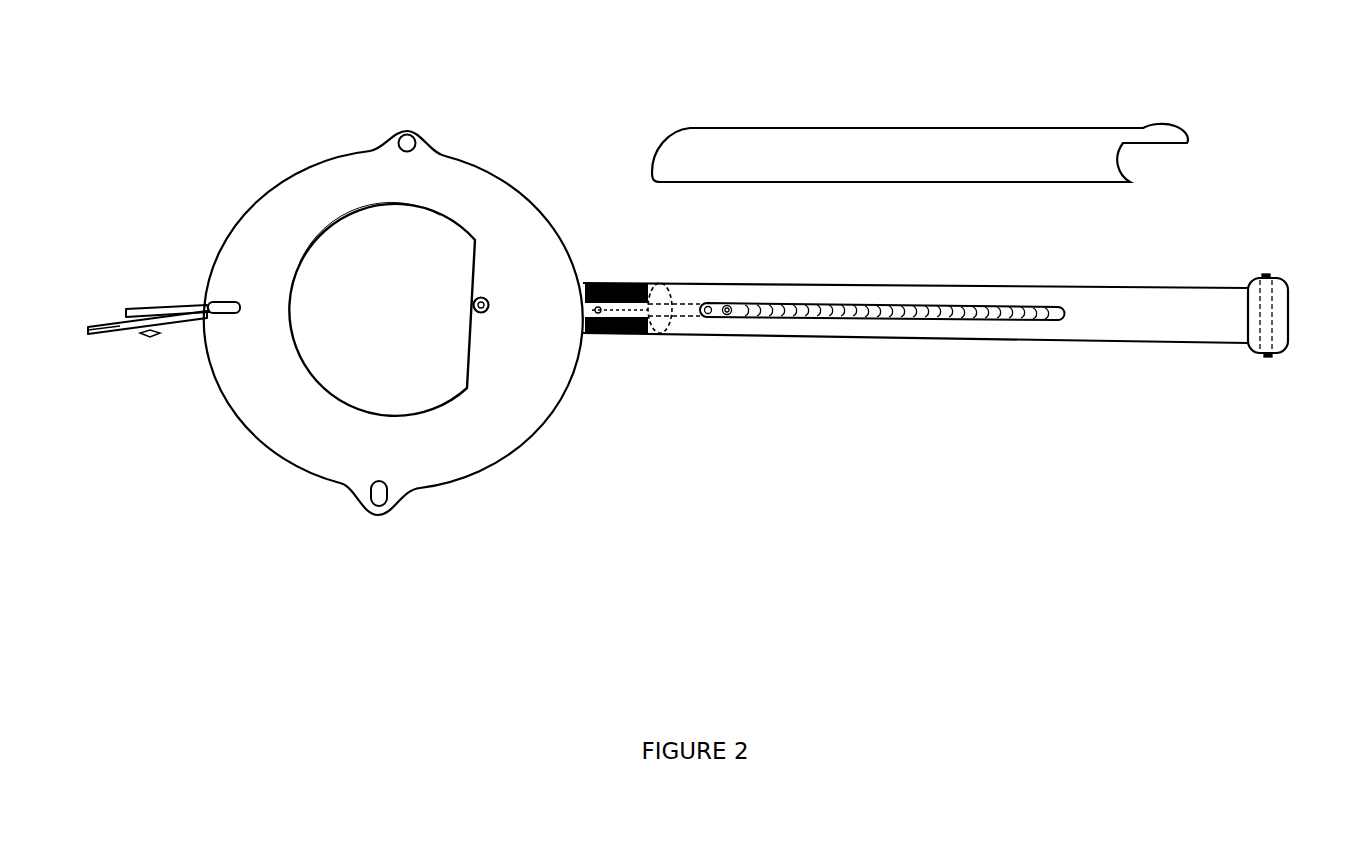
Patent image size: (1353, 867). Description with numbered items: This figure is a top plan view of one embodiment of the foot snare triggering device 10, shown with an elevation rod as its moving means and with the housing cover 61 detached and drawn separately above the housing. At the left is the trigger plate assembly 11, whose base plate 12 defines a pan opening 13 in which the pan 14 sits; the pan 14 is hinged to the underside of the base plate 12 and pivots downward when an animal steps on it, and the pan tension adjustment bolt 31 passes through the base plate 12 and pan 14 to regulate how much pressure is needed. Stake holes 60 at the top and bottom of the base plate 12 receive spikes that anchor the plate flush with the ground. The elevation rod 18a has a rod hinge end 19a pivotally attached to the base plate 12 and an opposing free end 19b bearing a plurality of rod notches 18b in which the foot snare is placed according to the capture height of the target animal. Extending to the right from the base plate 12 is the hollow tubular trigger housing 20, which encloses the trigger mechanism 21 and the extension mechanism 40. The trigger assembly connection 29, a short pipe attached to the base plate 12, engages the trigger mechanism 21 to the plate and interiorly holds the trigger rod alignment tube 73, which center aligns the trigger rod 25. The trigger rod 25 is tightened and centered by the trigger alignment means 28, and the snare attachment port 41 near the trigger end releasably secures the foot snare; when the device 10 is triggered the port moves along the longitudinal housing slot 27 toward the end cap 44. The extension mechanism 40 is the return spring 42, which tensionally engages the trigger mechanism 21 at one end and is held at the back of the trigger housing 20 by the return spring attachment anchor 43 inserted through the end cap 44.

The foot snare triggering device 10 is at (690, 278).
The trigger plate assembly 11 is at (475, 138).
The base plate 12 is at (307, 465).
The pan opening 13 is at (316, 250).
The pan 14 is at (352, 250).
The elevation rod 18a is at (113, 323).
The rod notches 18b is at (155, 310).
The rod hinge end 19a is at (231, 302).
The free end 19b is at (90, 335).
The trigger housing 20 is at (1087, 316).
The trigger mechanism 21 is at (608, 272).
The trigger rod 25 is at (690, 318).
The housing slot 27 is at (971, 320).
The trigger alignment means 28 is at (726, 318).
The trigger assembly connection 29 is at (662, 335).
The pan tension adjustment bolt 31 is at (482, 312).
The extension mechanism 40 is at (905, 270).
The snare attachment port 41 is at (708, 318).
The return spring 42 is at (852, 320).
The return spring attachment anchor 43 is at (1268, 357).
The end cap 44 is at (1250, 350).
The stake holes 60 is at (408, 133).
The housing cover 61 is at (900, 128).
The trigger rod alignment tube 73 is at (605, 333).